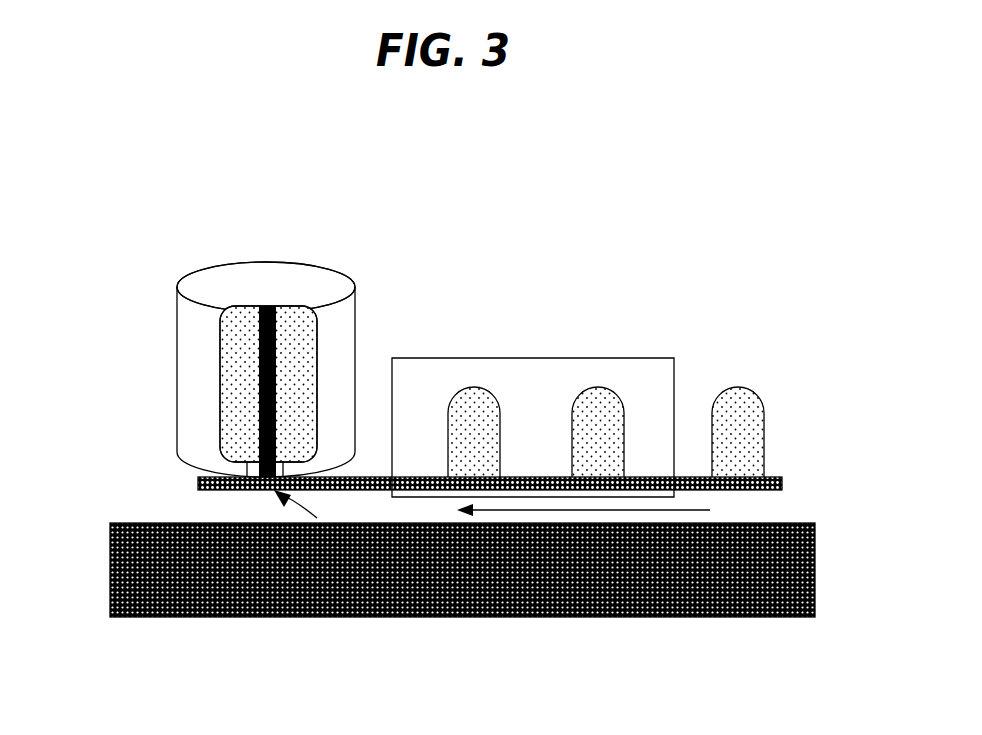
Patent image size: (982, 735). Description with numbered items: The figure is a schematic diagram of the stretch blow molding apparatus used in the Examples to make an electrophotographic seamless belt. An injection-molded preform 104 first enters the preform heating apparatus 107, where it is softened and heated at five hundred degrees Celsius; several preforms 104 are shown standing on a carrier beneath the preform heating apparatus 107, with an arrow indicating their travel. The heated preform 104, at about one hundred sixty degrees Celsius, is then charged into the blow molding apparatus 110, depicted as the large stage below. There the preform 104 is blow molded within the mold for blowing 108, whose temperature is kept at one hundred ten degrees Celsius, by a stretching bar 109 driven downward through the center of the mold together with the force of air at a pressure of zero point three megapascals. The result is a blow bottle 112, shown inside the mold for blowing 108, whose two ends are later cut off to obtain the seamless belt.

The preform 104 is at (748, 427).
The preform heating apparatus 107 is at (537, 380).
The mold for blowing 108 is at (317, 297).
The stretching bar 109 is at (253, 353).
The blow molding apparatus 110 is at (343, 617).
The blow bottle 112 is at (193, 415).